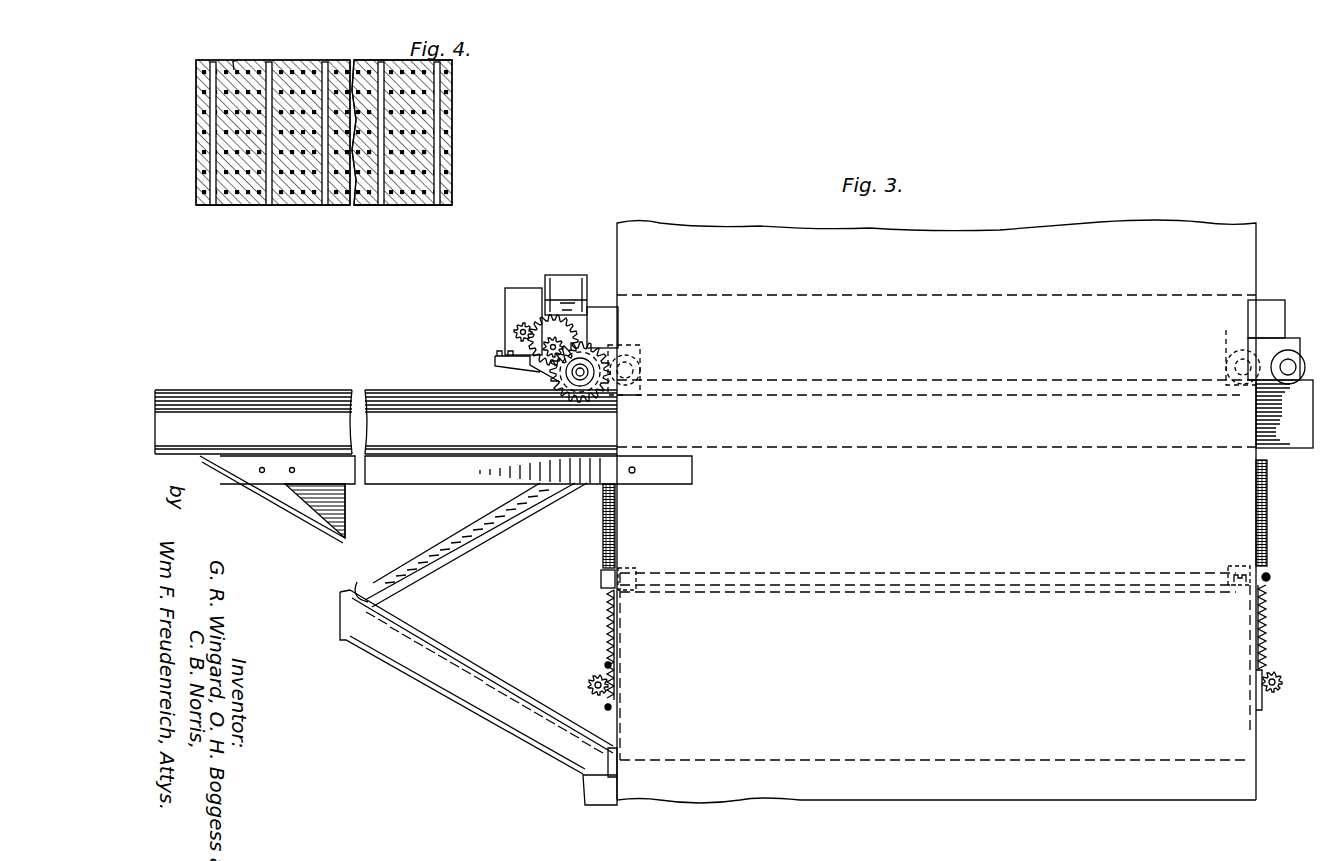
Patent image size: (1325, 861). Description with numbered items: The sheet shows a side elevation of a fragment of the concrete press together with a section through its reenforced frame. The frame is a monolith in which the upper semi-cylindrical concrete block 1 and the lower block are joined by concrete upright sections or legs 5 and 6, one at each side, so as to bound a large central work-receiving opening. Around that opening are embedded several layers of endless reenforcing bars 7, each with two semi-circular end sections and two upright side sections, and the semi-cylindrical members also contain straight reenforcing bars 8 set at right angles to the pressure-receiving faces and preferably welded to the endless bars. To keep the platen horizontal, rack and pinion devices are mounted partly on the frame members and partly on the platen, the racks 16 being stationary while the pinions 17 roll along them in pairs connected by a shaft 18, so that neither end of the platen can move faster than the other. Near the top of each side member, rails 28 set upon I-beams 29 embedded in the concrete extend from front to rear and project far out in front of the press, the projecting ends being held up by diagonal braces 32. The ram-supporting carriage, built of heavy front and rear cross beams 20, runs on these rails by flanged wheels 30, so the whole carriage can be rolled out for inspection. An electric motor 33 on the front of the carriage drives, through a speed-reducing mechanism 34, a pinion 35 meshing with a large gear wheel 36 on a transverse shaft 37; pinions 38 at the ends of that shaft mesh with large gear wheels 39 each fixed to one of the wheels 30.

In FIG. 4, the semi-cylindrical concrete block 1 is at (198, 72).
In FIG. 4, the concrete upright section 5 is at (232, 64).
In FIG. 3, the concrete upright section 6 is at (1225, 508).
In FIG. 4, the endless reenforcing bars 7 is at (210, 120).
In FIG. 4, the straight reenforcing bars 8 is at (260, 207).
In FIG. 3, the racks 16 is at (600, 536).
In FIG. 3, the pinions 17 is at (601, 575).
In FIG. 3, the shaft 18 is at (586, 686).
In FIG. 3, the cross beams 20 is at (617, 298).
In FIG. 3, the rails 28 is at (370, 392).
In FIG. 3, the I-beams 29 is at (253, 420).
In FIG. 3, the flanged wheels 30 is at (642, 372).
In FIG. 3, the diagonal braces 32 is at (325, 540).
In FIG. 3, the electric motor 33 is at (565, 275).
In FIG. 3, the speed-reducing mechanism 34 is at (505, 300).
In FIG. 3, the pinion 35 is at (514, 332).
In FIG. 3, the large gear wheel 36 is at (540, 328).
In FIG. 3, the transverse shaft 37 is at (545, 348).
In FIG. 3, the pinions 38 is at (495, 360).
In FIG. 3, the large gear wheels 39 is at (600, 352).